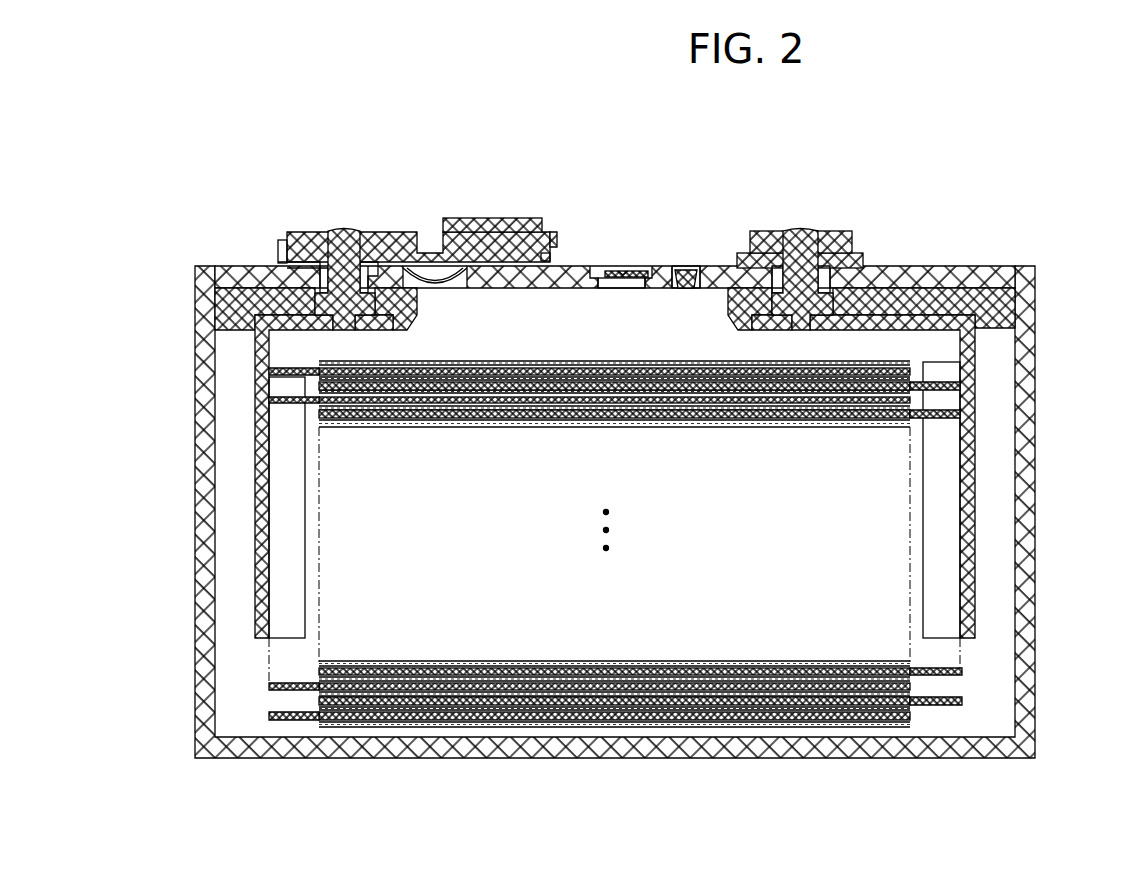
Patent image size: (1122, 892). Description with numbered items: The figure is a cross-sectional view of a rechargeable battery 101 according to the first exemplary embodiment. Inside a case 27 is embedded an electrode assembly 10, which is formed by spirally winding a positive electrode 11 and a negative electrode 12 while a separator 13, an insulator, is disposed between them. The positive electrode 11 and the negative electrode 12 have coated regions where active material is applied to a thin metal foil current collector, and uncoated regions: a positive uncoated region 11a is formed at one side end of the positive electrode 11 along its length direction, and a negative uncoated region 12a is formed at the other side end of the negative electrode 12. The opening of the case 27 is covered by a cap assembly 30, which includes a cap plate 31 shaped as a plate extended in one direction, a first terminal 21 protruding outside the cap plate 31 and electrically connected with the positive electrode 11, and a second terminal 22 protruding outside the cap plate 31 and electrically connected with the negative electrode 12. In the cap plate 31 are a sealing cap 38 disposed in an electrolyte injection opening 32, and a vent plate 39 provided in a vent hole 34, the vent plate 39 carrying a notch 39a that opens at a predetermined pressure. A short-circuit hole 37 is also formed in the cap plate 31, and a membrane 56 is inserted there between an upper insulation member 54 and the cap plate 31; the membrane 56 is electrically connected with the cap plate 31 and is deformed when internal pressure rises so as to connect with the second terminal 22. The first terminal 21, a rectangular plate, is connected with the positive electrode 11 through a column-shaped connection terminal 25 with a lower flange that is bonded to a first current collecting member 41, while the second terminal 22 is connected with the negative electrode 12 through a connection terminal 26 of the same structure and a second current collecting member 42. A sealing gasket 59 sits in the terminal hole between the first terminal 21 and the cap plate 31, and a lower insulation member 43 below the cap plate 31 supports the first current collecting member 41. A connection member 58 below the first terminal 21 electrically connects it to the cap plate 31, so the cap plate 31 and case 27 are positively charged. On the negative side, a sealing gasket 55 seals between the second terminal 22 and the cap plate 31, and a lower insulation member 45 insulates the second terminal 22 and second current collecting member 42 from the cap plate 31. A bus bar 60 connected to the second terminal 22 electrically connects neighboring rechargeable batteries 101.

The rechargeable battery 101 is at (602, 118).
The electrode assembly 10 is at (712, 742).
The positive electrode 11 is at (812, 702).
The positive uncoated region 11a is at (943, 706).
The negative electrode 12 is at (412, 721).
The negative uncoated region 12a is at (285, 721).
The separator 13 is at (620, 693).
The first terminal 21 is at (831, 244).
The second terminal 22 is at (304, 240).
The connection terminal 25 is at (802, 248).
The connection terminal 26 is at (345, 246).
The case 27 is at (1033, 556).
The cap assembly 30 is at (582, 258).
The cap plate 31 is at (990, 278).
The electrolyte injection opening 32 is at (683, 290).
The vent hole 34 is at (620, 290).
The short-circuit hole 37 is at (396, 281).
The sealing cap 38 is at (684, 269).
The vent plate 39 is at (644, 270).
The notch 39a is at (622, 270).
The first current collecting member 41 is at (976, 430).
The second current collecting member 42 is at (268, 378).
The lower insulation member 43 is at (993, 310).
The lower insulation member 45 is at (232, 309).
The upper insulation member 54 is at (554, 243).
The sealing gasket 55 is at (288, 278).
The membrane 56 is at (431, 280).
The connection member 58 is at (865, 258).
The sealing gasket 59 is at (771, 282).
The bus bar 60 is at (490, 223).